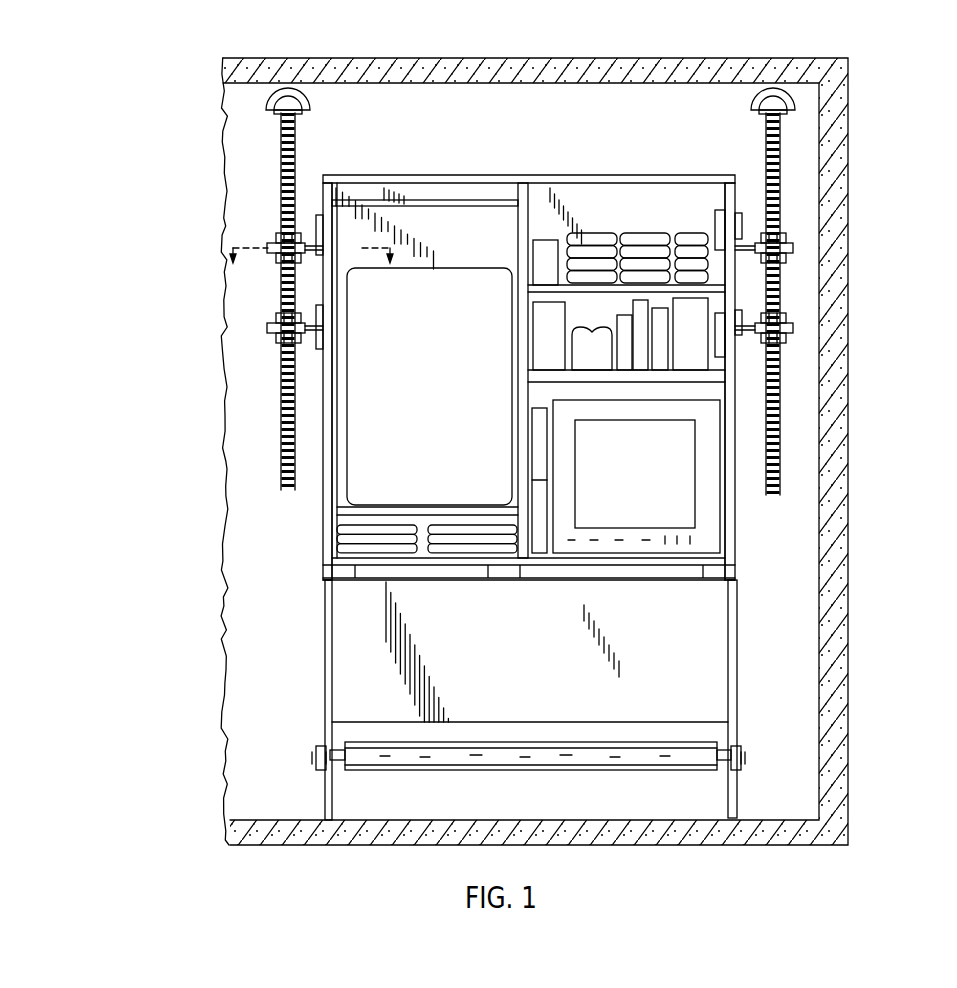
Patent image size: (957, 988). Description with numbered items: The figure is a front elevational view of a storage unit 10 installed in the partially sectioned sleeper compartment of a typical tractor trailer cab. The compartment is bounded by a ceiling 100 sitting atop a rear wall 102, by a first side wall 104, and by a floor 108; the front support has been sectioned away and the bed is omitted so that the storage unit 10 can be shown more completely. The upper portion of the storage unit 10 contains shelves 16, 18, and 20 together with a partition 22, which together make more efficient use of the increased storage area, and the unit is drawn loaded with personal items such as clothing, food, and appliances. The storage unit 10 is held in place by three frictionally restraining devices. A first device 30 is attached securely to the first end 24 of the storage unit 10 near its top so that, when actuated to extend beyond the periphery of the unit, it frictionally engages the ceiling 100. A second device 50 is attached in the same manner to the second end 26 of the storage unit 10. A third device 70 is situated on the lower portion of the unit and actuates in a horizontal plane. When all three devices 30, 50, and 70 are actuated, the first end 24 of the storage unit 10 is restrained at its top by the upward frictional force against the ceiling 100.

The ceiling 100 is at (638, 66).
The rear wall 102 is at (850, 482).
The first side wall 104 is at (466, 135).
The floor 108 is at (705, 838).
The storage unit 10 is at (597, 158).
The first device 30 is at (262, 211).
The second device 50 is at (800, 221).
The partition 22 is at (523, 222).
The shelf 16 is at (532, 287).
The shelf 18 is at (537, 378).
The shelf 20 is at (374, 508).
The first end 24 is at (327, 506).
The second end 26 is at (732, 512).
The third device 70 is at (505, 788).